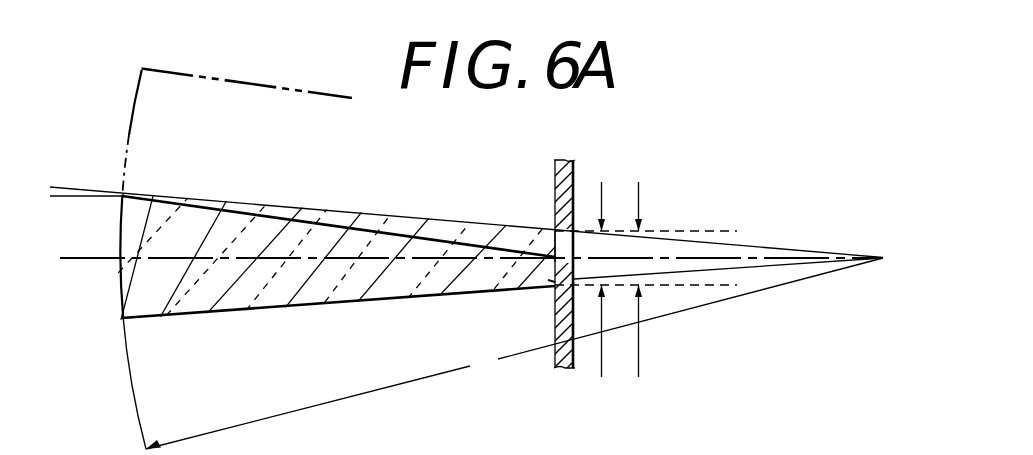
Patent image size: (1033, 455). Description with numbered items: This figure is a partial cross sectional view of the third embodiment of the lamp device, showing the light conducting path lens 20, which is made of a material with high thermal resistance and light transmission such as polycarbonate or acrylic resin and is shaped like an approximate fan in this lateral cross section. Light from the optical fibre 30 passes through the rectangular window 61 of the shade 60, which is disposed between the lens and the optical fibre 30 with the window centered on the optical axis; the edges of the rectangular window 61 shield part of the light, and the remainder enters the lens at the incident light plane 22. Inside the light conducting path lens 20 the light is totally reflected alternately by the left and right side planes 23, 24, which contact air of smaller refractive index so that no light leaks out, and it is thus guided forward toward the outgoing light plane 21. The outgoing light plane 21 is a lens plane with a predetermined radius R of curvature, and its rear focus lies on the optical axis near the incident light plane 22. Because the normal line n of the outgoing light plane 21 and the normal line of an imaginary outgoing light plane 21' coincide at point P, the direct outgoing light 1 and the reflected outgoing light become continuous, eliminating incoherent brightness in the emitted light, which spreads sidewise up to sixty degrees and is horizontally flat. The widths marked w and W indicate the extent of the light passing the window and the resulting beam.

The direct outgoing light 1 is at (72, 186).
The normal line of the outgoing light plane n is at (61, 196).
The light conducting path lens 20 is at (388, 216).
The outgoing light plane 21 is at (94, 322).
The imaginary outgoing light plane 21' is at (207, 129).
The incident light plane 22 is at (546, 282).
The left side plane 23 is at (290, 208).
The right side plane 24 is at (284, 309).
The optical fibre 30 is at (690, 232).
The shade 60 is at (571, 190).
The rectangular window 61 is at (562, 244).
The point P is at (128, 192).
The radius of curvature R is at (514, 353).
The slit width w is at (602, 279).
The beam width W is at (636, 279).